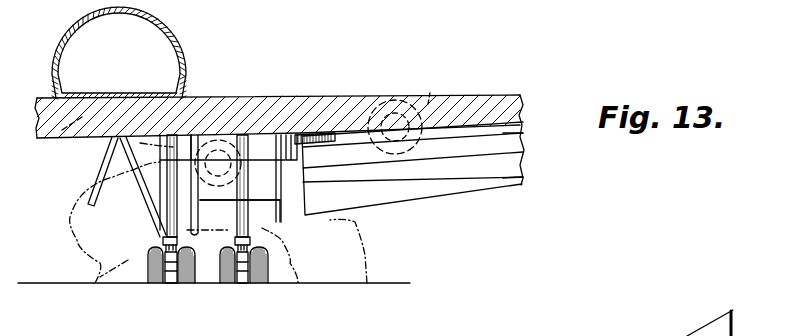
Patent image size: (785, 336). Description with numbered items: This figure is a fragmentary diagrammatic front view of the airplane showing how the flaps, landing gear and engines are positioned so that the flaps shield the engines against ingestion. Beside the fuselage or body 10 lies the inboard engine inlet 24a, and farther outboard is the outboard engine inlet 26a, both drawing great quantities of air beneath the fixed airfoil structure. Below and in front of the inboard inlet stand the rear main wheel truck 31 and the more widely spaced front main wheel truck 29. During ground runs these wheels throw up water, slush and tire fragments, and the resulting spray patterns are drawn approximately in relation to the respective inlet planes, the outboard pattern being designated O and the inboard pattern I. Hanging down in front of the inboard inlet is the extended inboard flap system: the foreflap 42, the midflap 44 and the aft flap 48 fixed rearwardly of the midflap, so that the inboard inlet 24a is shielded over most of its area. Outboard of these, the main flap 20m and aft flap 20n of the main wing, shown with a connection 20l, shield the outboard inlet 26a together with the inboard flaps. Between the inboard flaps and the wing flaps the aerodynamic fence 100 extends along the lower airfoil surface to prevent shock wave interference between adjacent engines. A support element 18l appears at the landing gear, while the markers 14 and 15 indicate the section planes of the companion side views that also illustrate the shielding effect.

The fuselage or body 10 is at (165, 23).
The inboard engine inlet 24a is at (237, 91).
The foreflap 42 is at (273, 153).
The aerodynamic fence 100 is at (329, 135).
The panel connection 20l is at (367, 135).
The outboard engine inlet 26a is at (432, 89).
The main flap 20m is at (522, 138).
The aft flap 20n is at (521, 179).
The midflap 44 is at (273, 192).
The aft flap 48 is at (276, 221).
The support rod with strut 18l is at (163, 238).
The rear main wheel truck 31 is at (168, 285).
The front main wheel truck 29 is at (247, 284).
The outboard spray pattern O is at (73, 237).
The inboard spray pattern I is at (93, 283).
The vertical stabilizing surface 14 is at (423, 80).
The section line 15- 15 is at (217, 78).